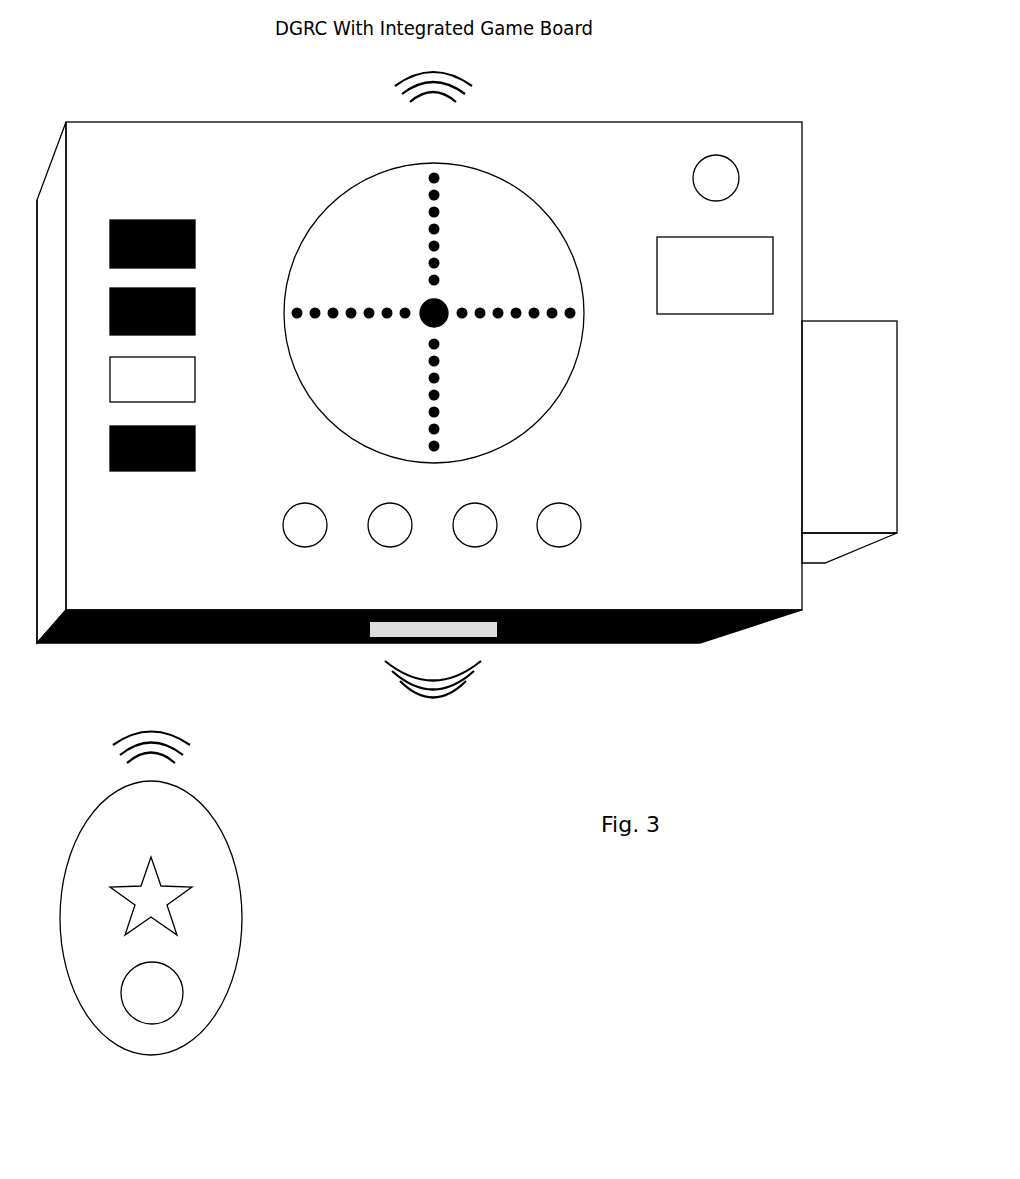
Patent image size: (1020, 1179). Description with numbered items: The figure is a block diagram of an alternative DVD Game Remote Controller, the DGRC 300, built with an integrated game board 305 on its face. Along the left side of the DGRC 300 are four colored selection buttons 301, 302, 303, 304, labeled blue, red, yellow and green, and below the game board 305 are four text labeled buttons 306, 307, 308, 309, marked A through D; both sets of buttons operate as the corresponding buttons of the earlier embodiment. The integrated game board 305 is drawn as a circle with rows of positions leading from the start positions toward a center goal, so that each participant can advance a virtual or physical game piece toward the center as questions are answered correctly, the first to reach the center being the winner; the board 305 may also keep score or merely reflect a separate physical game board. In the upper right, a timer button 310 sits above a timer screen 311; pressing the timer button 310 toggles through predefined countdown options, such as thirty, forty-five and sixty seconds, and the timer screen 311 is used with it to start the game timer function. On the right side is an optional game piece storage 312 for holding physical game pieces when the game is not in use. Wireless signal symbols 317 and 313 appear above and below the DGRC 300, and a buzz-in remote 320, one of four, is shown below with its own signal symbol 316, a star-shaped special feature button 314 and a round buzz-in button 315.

The DGRC 300 is at (665, 122).
The colored selection button 301 is at (110, 240).
The colored selection button 302 is at (110, 308).
The colored selection button 303 is at (118, 380).
The colored selection button 304 is at (120, 449).
The integrated game board 305 is at (434, 313).
The text labeled button 306 is at (298, 543).
The text labeled button 307 is at (383, 543).
The text labeled button 308 is at (468, 543).
The text labeled button 309 is at (552, 543).
The timer button 310 is at (702, 167).
The timer screen 311 is at (698, 307).
The game piece storage 312 is at (822, 320).
The wireless signal from base 313 is at (420, 676).
The special feature button 314 is at (172, 924).
The buzz-in button 315 is at (177, 983).
The wireless signal from remote 316 is at (164, 755).
The wireless signal from board 317 is at (448, 94).
The buzz-in remote 320 is at (243, 883).